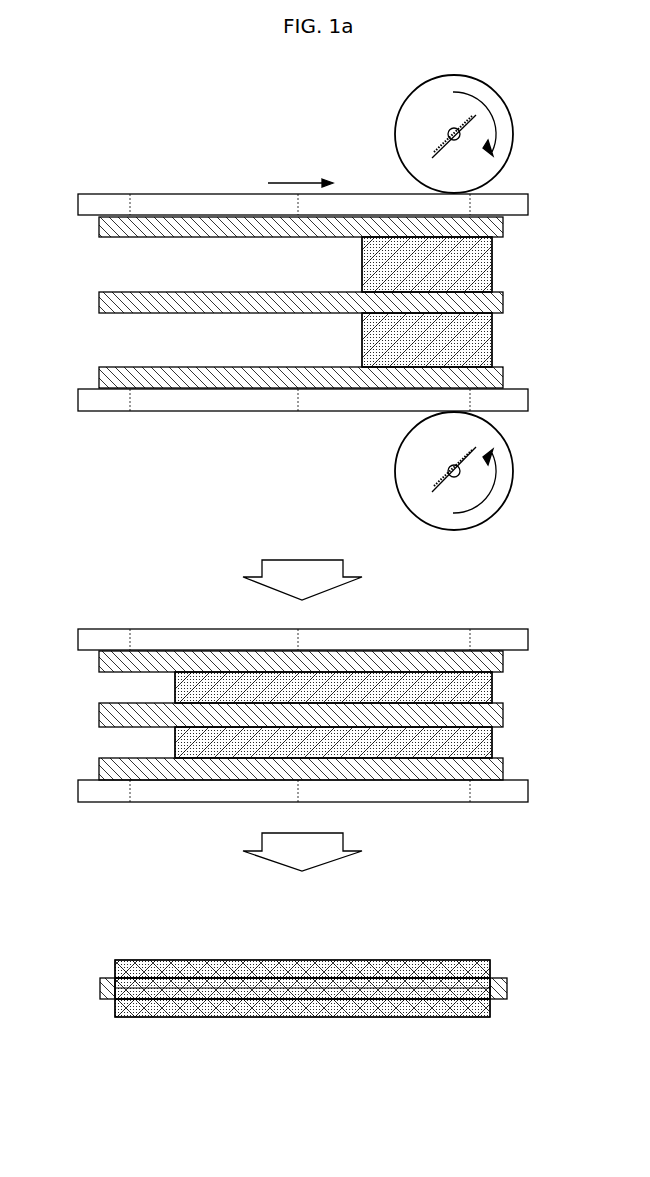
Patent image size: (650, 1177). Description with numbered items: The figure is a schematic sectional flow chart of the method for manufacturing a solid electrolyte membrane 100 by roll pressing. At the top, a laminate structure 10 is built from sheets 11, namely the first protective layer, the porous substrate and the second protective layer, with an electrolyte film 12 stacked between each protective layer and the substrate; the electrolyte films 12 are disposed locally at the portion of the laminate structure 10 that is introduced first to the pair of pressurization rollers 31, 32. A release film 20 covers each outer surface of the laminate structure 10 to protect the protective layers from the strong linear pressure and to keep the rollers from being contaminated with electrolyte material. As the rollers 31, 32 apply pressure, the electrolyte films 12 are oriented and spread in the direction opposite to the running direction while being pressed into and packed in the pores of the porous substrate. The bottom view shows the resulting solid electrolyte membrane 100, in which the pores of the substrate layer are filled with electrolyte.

The laminate structure 10 is at (353, 497).
The first protective layer, second protective layer and porous substrate 11 is at (505, 227).
The electrolyte film 12 is at (493, 266).
The release film 20 is at (78, 202).
The pressurization roller 31 is at (514, 135).
The pressurization roller 32 is at (514, 471).
The solid electrolyte membrane 100 is at (197, 937).